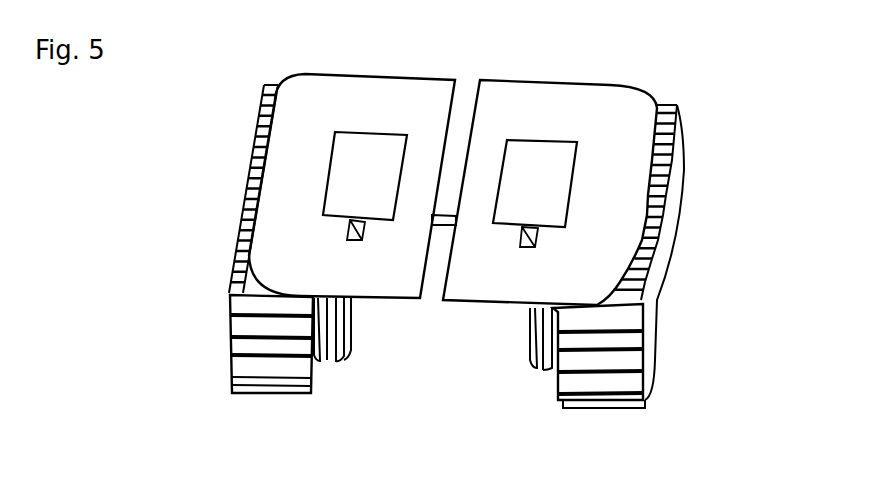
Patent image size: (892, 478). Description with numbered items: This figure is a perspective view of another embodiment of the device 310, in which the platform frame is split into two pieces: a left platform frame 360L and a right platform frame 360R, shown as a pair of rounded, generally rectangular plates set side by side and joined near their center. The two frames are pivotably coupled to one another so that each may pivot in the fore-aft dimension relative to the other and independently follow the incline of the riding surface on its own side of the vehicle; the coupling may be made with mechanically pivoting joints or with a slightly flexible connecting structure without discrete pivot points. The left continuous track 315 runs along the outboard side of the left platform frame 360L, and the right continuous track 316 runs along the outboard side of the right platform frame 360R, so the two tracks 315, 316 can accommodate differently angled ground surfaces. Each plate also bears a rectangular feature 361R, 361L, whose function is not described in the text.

The device 310 is at (181, 166).
The right platform frame 360R is at (315, 92).
The left platform frame 360L is at (610, 103).
The right panel recess 361R is at (353, 178).
The left panel recess 361L is at (550, 200).
The right continuous track 316 is at (272, 388).
The left continuous track 315 is at (615, 410).